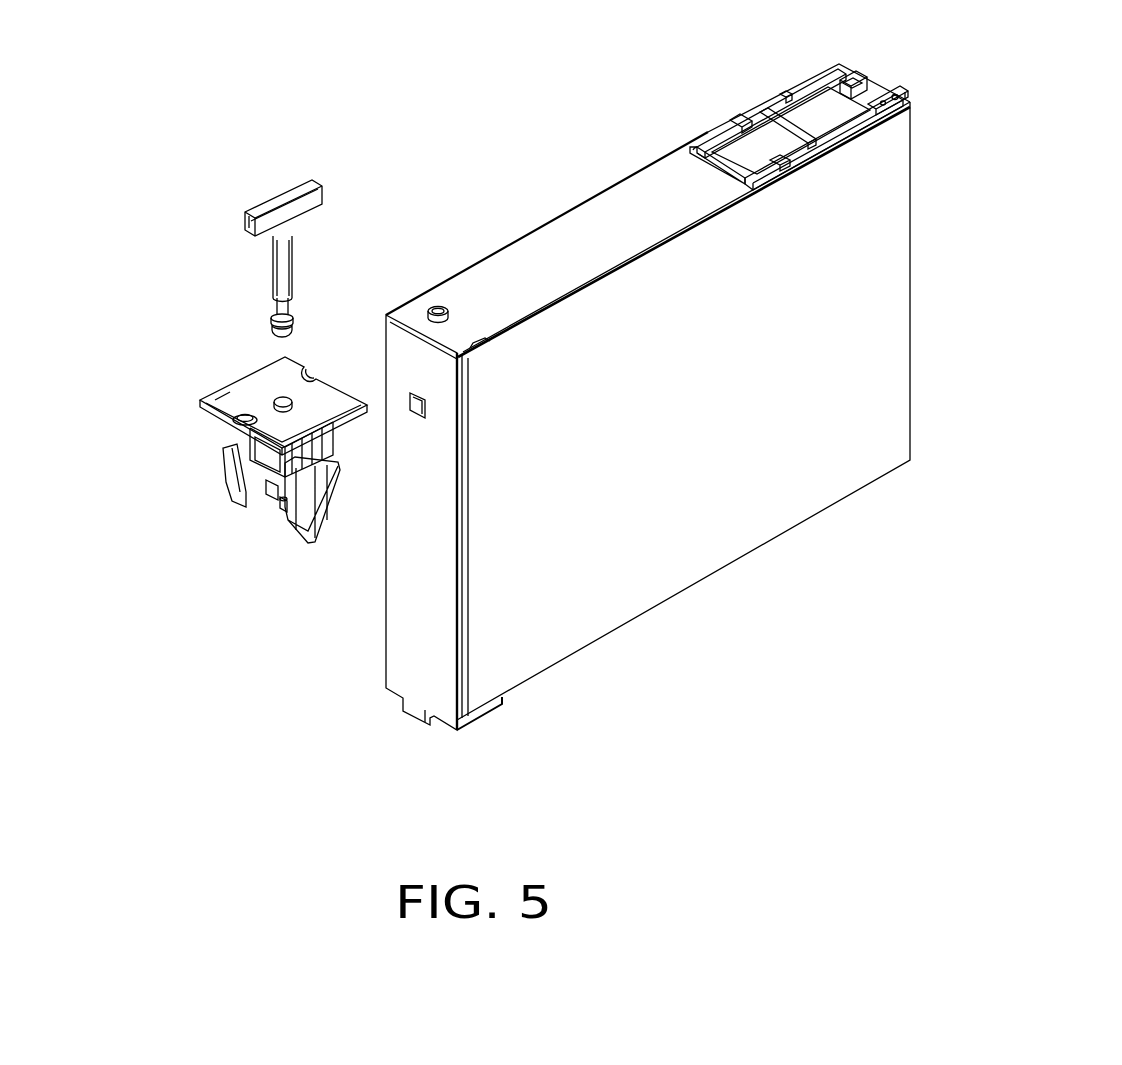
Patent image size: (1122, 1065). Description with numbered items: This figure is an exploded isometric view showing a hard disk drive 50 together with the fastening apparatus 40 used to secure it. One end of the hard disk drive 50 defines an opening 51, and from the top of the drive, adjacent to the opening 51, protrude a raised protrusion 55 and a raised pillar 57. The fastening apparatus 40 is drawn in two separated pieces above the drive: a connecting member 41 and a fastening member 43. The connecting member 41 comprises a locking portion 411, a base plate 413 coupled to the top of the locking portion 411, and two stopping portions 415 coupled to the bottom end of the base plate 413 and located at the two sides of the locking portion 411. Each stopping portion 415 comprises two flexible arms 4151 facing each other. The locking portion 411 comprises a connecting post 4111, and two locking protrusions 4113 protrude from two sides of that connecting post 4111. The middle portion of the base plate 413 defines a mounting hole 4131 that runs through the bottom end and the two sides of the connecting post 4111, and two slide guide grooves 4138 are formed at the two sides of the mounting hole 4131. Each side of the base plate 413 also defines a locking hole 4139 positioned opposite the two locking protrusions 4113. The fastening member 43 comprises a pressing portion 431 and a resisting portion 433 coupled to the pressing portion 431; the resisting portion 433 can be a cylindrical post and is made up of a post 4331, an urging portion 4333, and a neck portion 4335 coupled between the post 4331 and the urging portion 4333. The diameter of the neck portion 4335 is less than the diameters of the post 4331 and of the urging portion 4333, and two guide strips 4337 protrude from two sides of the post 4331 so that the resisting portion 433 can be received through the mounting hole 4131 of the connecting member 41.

The fastening apparatus 40 is at (156, 270).
The connecting member 41 is at (89, 387).
The locking portion 411 is at (211, 511).
The connecting post 4111 is at (283, 510).
The locking protrusions 4113 is at (262, 492).
The base plate 413 is at (234, 387).
The mounting hole 4131 is at (280, 393).
The slide guide grooves 4138 is at (270, 395).
The locking hole 4139 is at (350, 348).
The stopping portions 415 is at (235, 516).
The flexible arms 4151 is at (328, 487).
The fastening member 43 is at (275, 173).
The pressing portion 431 is at (273, 198).
The resisting portion 433 is at (375, 267).
The post 4331 is at (283, 241).
The urging portion 4333 is at (288, 327).
The neck portion 4335 is at (288, 305).
The guide strips 4337 is at (290, 272).
The hard disk drive 50 is at (642, 381).
The opening 51 is at (410, 405).
The raised protrusion 55 is at (857, 77).
The raised pillar 57 is at (447, 312).